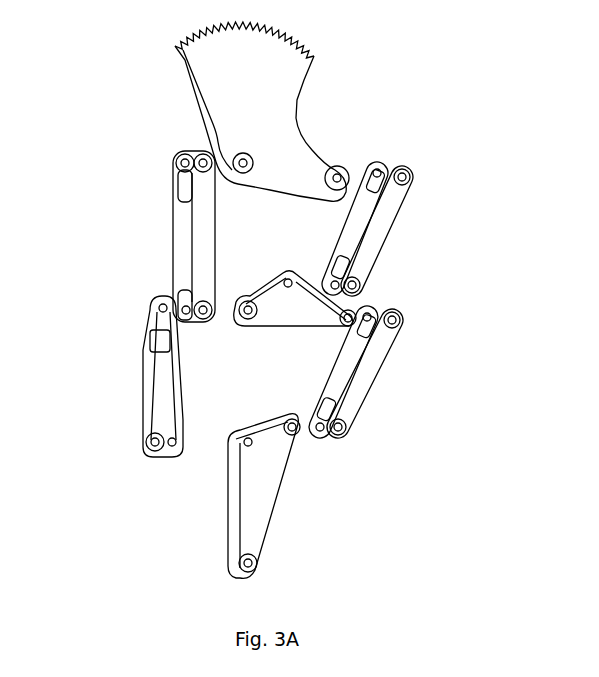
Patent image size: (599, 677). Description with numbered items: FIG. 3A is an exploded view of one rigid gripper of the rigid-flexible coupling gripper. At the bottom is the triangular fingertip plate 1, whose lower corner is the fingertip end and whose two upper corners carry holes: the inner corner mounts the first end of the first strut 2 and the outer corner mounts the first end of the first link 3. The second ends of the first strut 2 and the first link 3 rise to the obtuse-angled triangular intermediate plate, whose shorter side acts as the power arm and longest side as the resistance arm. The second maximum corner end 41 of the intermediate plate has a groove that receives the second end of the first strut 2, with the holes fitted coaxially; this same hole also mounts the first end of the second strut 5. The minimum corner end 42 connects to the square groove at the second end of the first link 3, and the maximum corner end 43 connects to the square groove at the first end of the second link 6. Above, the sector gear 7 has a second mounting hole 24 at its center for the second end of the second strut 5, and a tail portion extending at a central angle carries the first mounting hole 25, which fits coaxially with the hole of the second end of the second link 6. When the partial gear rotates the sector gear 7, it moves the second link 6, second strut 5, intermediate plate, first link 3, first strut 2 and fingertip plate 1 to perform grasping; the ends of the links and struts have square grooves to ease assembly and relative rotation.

The fingertip plate 1 is at (273, 507).
The first strut 2 is at (143, 368).
The first link 3 is at (373, 375).
The second strut 5 is at (178, 233).
The second link 6 is at (395, 226).
The sector gear 7 is at (297, 79).
The second mounting hole 24 is at (241, 162).
The first mounting hole 25 is at (338, 177).
The second maximum corner end 41 is at (240, 320).
The minimum corner end 42 is at (347, 317).
The maximum corner end 43 is at (288, 280).